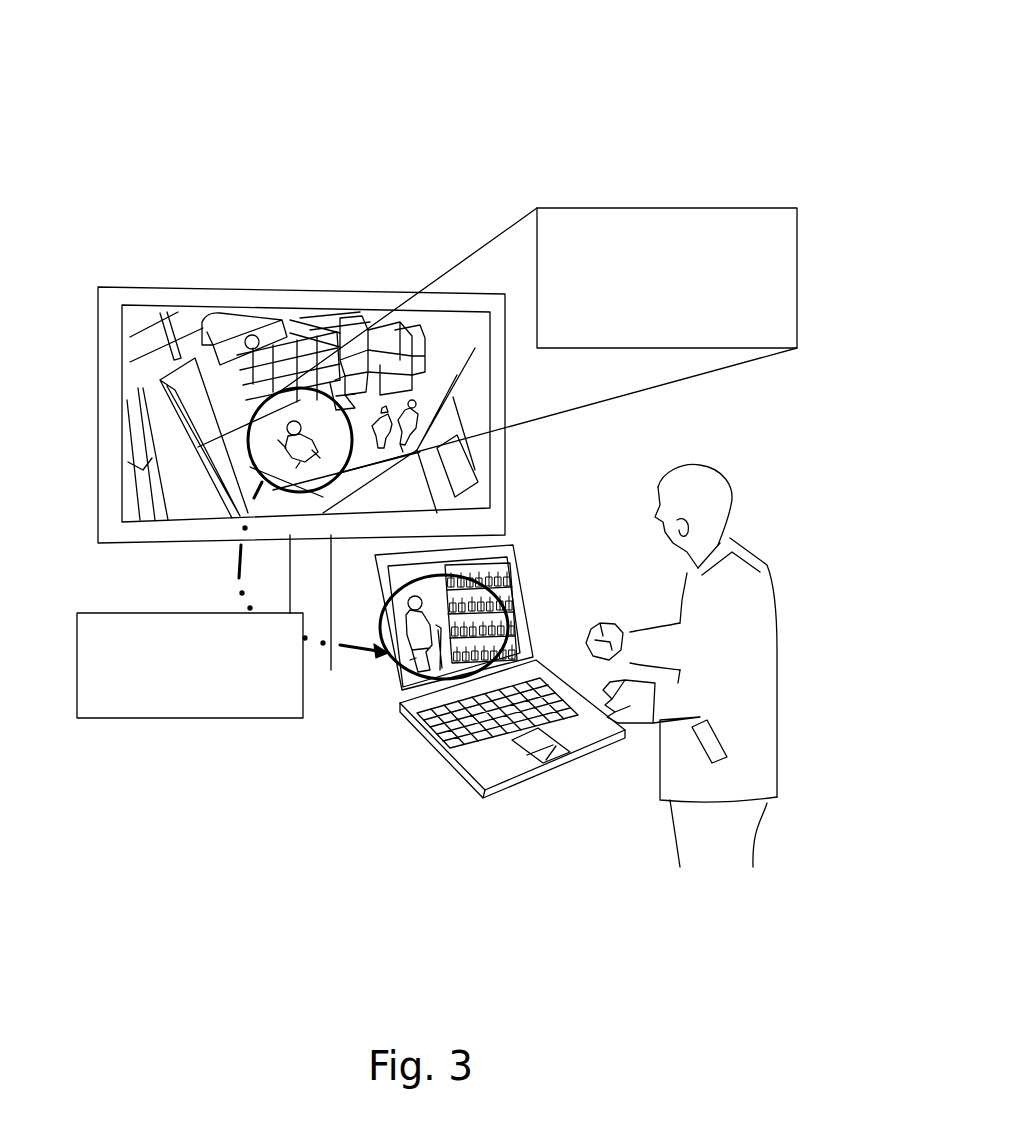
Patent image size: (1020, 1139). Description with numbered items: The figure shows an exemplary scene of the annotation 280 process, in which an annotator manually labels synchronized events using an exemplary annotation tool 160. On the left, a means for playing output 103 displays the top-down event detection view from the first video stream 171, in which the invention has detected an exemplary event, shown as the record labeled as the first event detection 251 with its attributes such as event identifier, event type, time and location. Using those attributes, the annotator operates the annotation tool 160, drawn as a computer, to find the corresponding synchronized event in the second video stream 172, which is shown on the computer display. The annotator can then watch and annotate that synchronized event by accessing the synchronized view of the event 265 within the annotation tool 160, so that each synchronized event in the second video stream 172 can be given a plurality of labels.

The annotation process 280 is at (711, 86).
The event detection 1 251 is at (630, 208).
The means for playing output 103 is at (146, 287).
The first video stream 171 is at (232, 320).
The second video stream 172 is at (517, 558).
The synchronized view of the event 265 is at (190, 720).
The annotation tool 160 is at (507, 777).